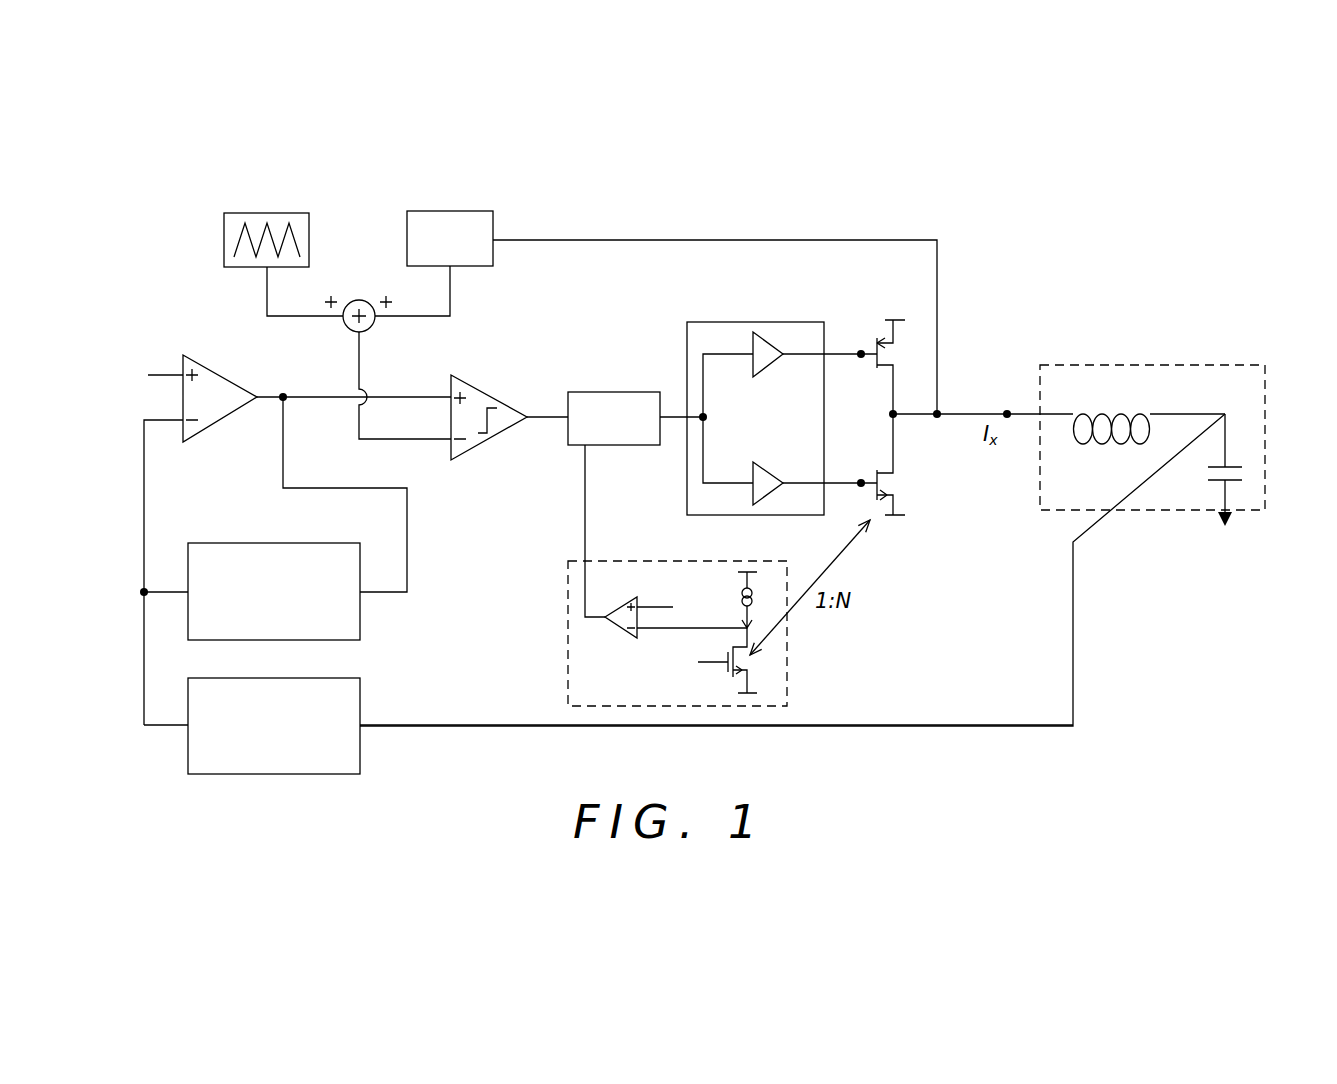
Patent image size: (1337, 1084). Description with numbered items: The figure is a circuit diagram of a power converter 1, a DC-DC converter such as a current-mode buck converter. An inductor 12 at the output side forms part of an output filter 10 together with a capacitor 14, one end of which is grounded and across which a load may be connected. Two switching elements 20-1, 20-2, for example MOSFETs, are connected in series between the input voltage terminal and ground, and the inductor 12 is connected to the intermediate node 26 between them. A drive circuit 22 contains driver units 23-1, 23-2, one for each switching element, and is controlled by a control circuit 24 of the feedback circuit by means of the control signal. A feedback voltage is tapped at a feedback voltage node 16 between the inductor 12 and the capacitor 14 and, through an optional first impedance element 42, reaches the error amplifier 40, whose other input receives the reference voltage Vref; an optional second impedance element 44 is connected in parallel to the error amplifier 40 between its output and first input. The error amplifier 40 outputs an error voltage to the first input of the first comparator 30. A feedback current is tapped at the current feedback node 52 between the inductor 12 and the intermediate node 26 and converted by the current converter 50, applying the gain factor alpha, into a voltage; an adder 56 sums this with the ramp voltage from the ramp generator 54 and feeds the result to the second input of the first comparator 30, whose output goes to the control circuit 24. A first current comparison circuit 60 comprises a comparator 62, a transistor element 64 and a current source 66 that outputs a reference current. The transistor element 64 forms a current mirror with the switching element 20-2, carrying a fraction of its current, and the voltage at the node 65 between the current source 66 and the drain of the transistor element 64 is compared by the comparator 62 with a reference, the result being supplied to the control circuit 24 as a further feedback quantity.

The power converter 1 is at (165, 202).
The output filter 10 is at (1187, 365).
The inductor 12 is at (1082, 387).
The capacitor 14 is at (1247, 478).
The feedback voltage node 16 is at (1232, 408).
The switching element 20-1 is at (875, 338).
The switching element 20-2 is at (897, 484).
The drive circuit 22 is at (718, 322).
The driver unit 23-1 is at (770, 364).
The driver unit 23-2 is at (770, 466).
The control circuit 24 is at (590, 391).
The intermediate node 26 is at (889, 414).
The first comparator 30 is at (485, 387).
The error amplifier 40 is at (215, 367).
The first impedance element 42 is at (273, 677).
The second impedance element 44 is at (273, 542).
The current converter 50 is at (478, 211).
The current feedback node 52 is at (937, 420).
The ramp generator 54 is at (293, 211).
The adder 56 is at (355, 333).
The first current comparison circuit 60 is at (568, 670).
The comparator 62 is at (615, 627).
The transistor element 64 is at (753, 672).
The node 65 is at (753, 622).
The current source 66 is at (753, 598).